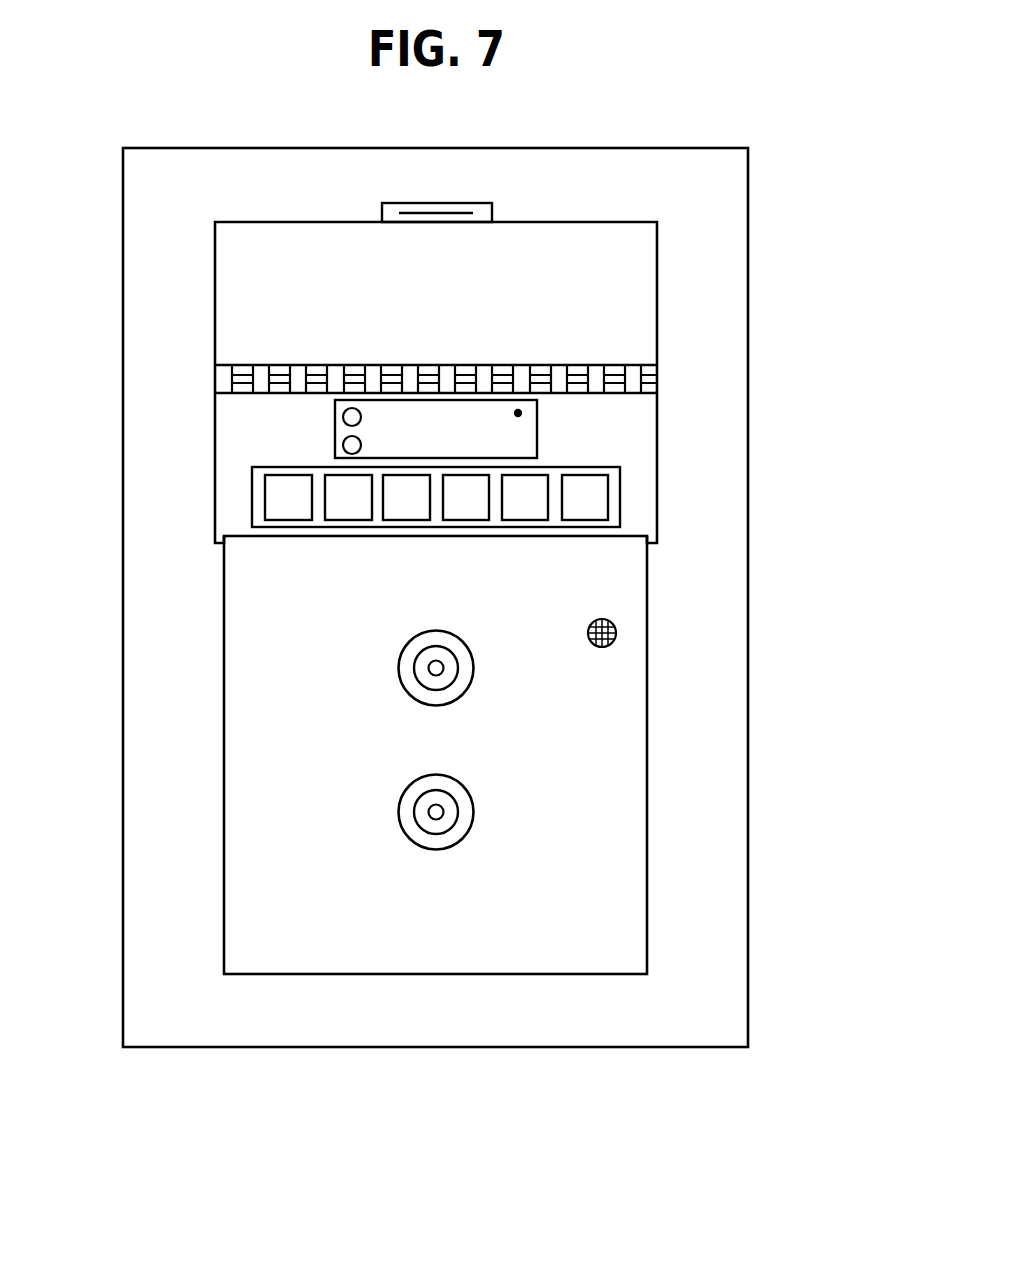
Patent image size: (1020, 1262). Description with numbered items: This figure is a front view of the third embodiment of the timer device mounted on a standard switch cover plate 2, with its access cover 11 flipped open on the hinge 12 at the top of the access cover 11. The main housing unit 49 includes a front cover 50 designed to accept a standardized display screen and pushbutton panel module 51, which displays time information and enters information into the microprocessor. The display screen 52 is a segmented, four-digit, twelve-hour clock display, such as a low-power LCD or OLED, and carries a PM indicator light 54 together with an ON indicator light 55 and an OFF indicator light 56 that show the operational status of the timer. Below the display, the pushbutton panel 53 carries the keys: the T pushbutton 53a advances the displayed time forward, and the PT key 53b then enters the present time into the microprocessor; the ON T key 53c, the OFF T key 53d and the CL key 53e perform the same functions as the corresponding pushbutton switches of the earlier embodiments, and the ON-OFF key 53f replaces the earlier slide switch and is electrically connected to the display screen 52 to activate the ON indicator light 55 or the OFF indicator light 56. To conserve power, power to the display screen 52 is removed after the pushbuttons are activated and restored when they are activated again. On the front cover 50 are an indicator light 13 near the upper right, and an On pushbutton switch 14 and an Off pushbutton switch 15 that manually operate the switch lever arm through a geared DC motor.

The switch cover plate 2 is at (390, 1047).
The access cover 11 is at (657, 262).
The hinge 12 is at (657, 376).
The indicator light 13 is at (616, 628).
The On pushbutton switch 14 is at (470, 686).
The Off pushbutton switch 15 is at (471, 800).
The main housing unit 49 is at (222, 754).
The front cover 50 is at (620, 943).
The display screen and pushbutton panel module 51 is at (645, 450).
The display screen 52 is at (537, 445).
The pushbutton panel 53 is at (481, 527).
The T pushbutton 53a is at (276, 520).
The PT key 53b is at (336, 520).
The ON T key 53c is at (394, 520).
The OFF T key 53d is at (478, 520).
The CL key 53e is at (540, 520).
The ON-OFF key 53f is at (597, 520).
The PM indicator light 54 is at (518, 413).
The ON indicator light 55 is at (343, 411).
The OFF indicator light 56 is at (343, 440).